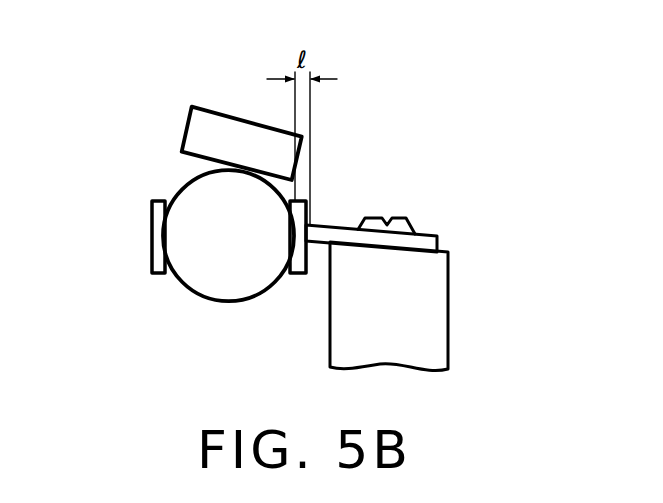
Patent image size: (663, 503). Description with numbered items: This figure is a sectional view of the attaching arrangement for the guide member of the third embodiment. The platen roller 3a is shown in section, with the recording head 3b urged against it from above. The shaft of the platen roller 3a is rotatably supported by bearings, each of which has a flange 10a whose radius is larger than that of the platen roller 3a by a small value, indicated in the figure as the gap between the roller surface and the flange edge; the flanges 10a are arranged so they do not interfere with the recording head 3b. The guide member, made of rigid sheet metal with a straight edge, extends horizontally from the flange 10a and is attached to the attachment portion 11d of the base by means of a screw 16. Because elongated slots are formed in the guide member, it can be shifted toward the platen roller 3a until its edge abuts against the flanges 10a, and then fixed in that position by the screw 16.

The platen roller 3a is at (207, 283).
The recording head 3b is at (202, 133).
The flange 10a is at (157, 245).
The screw 16 is at (407, 221).
The attachment portion 11d is at (437, 320).